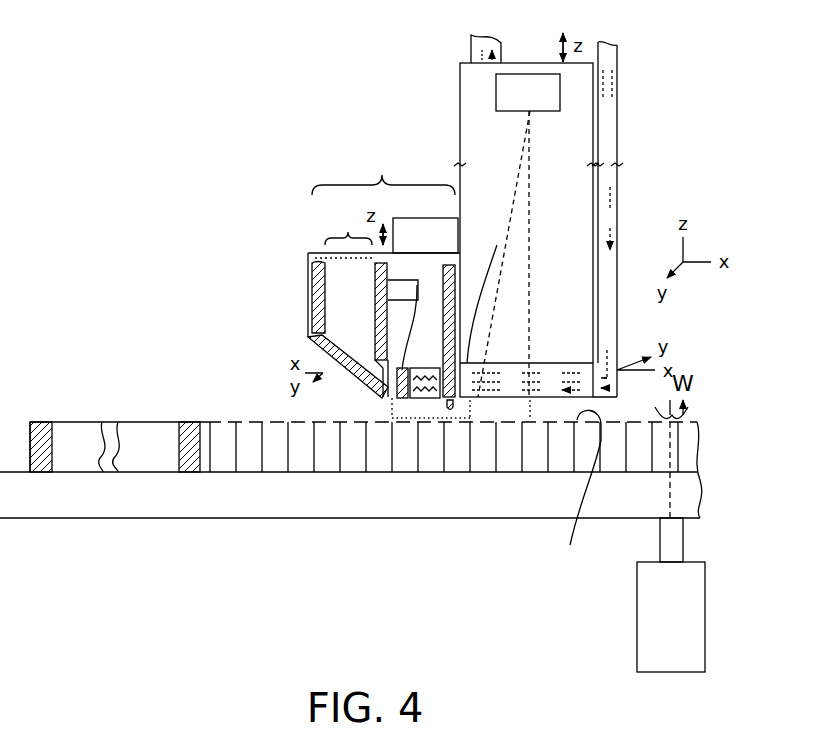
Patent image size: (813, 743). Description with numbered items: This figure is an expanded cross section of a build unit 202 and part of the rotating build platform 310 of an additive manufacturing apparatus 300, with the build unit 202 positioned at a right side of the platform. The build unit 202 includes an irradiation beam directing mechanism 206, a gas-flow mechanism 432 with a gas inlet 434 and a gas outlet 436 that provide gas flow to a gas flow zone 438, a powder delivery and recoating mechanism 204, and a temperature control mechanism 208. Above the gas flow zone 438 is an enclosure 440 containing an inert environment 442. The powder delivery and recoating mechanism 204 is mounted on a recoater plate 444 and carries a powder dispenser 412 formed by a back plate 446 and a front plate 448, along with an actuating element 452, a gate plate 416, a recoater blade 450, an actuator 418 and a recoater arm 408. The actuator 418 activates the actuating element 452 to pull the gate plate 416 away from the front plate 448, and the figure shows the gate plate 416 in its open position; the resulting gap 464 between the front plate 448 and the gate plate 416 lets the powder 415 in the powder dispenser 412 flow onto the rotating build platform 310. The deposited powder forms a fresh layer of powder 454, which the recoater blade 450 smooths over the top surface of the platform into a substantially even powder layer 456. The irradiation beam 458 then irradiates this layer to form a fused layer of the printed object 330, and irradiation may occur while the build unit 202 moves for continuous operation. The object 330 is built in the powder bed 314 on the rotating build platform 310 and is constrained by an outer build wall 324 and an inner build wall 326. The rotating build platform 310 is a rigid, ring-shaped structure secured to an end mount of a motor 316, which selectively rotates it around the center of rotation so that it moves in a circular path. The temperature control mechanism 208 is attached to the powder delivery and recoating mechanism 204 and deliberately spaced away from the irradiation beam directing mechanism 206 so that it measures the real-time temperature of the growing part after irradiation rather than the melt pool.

The additive manufacturing apparatus 300 is at (234, 125).
The build unit 202 is at (423, 57).
The powder delivery and recoating mechanism 204 is at (384, 200).
The irradiation beam directing mechanism 206 is at (522, 82).
The temperature control mechanism 208 is at (440, 223).
The enclosure 440 is at (460, 112).
The inert environment 442 is at (473, 143).
The gas-flow mechanism 432 is at (607, 137).
The irradiation beam 458 is at (530, 217).
The back plate 446 is at (313, 268).
The powder dispenser 412 is at (356, 300).
The recoater plate 444 is at (306, 283).
The gate plate 416 is at (388, 358).
The powder 415 is at (372, 293).
The front plate 448 is at (390, 280).
The recoater arm 408 is at (455, 288).
The gas outlet 436 is at (486, 291).
The gas flow zone 438 is at (543, 373).
The gas inlet 434 is at (591, 364).
The actuating element 452 is at (413, 300).
The outer build wall 324 is at (40, 422).
The printed object 330 is at (115, 422).
The powder bed 314 is at (155, 430).
The inner build wall 326 is at (188, 425).
The rotating build platform 310 is at (118, 518).
The fresh layer of powder 454 is at (380, 412).
The gap 464 is at (395, 392).
The actuator 418 is at (425, 400).
The recoater blade 450 is at (443, 397).
The substantially even powder layer 456 is at (576, 492).
The motor 316 is at (693, 633).